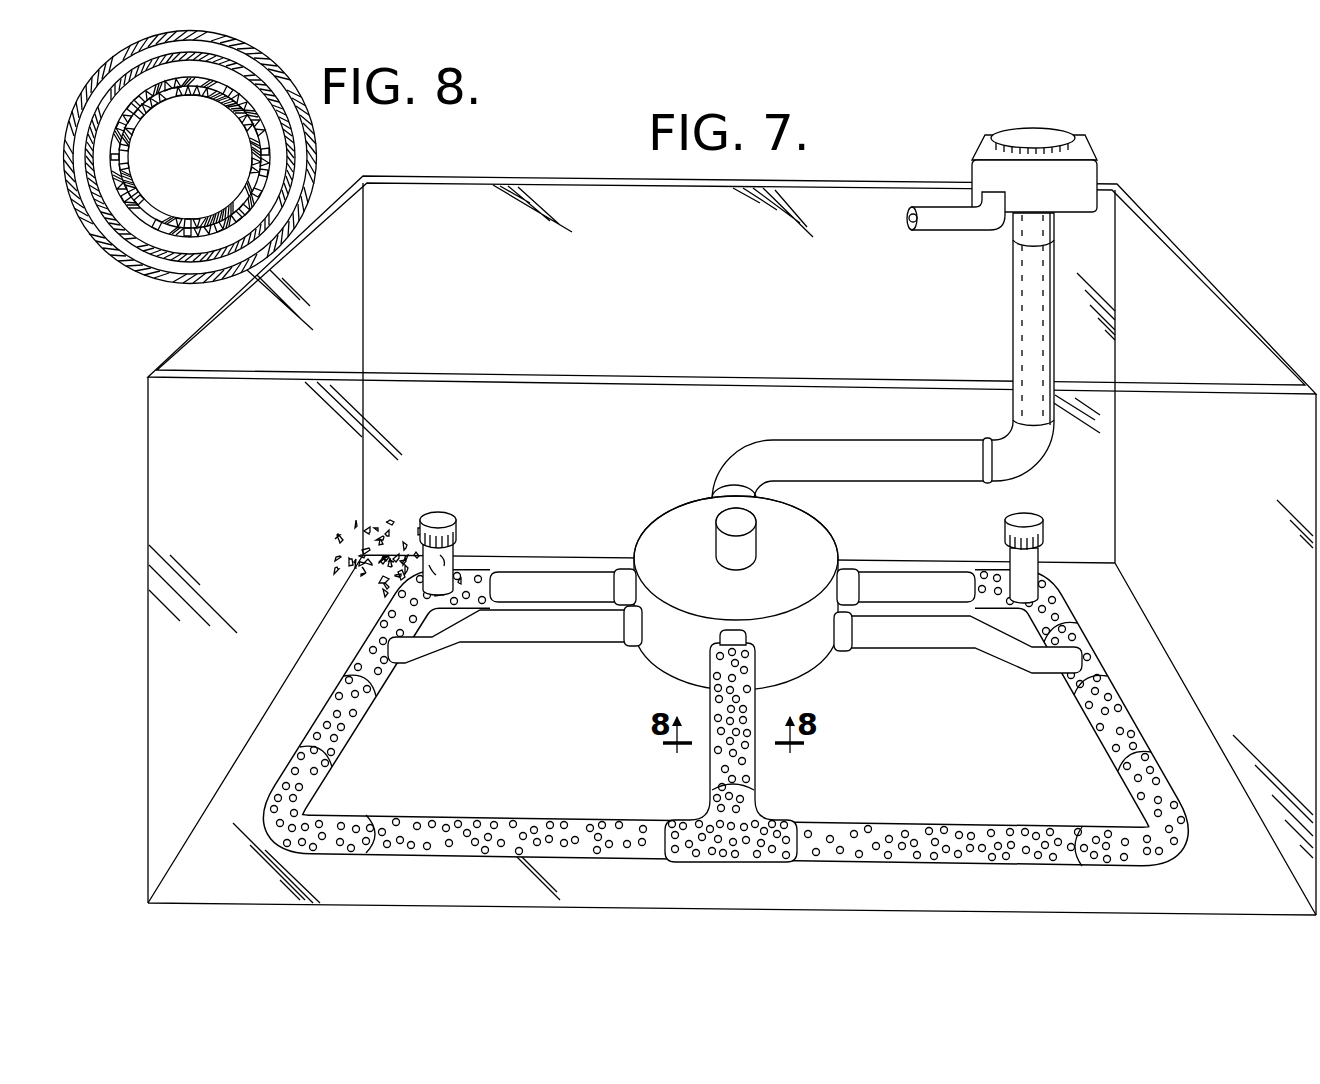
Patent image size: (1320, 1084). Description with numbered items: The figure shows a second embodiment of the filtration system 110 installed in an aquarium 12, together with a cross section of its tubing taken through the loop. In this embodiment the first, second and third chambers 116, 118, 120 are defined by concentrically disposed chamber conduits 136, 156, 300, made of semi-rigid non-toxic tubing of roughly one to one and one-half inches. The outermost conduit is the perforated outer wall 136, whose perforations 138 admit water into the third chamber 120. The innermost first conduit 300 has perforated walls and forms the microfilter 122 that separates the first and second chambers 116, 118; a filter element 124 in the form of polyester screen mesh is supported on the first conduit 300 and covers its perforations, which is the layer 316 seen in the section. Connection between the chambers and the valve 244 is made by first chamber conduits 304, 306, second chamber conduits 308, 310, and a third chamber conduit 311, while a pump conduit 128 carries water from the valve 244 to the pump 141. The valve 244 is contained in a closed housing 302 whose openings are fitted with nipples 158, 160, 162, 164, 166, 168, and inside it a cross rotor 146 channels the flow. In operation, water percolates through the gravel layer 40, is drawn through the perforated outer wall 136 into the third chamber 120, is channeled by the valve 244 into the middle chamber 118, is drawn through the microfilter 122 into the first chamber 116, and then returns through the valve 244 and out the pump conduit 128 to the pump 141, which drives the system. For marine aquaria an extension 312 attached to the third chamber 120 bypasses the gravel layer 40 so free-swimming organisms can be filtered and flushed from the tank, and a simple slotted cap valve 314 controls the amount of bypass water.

In FIG. 7, the aquarium tank 12 is at (1208, 270).
In FIG. 7, the gravel layer 40 is at (356, 540).
In FIG. 7, the system 110 is at (1100, 615).
In FIG. 8, the first chamber 116 is at (207, 176).
In FIG. 8, the second chamber 118 is at (140, 86).
In FIG. 8, the third chamber 120 is at (146, 58).
In FIG. 8, the microfilter 122 is at (276, 148).
In FIG. 8, the filter element 124 is at (278, 170).
In FIG. 7, the pump conduit 128 is at (828, 450).
In FIG. 8, the outer wall 136 is at (178, 284).
In FIG. 8, the perforations 138 is at (94, 244).
In FIG. 7, the pump 141 is at (1082, 176).
In FIG. 7, the cross rotor 146 is at (763, 524).
In FIG. 8, the chamber conduit 156 is at (303, 126).
In FIG. 7, the nipple 158 is at (733, 634).
In FIG. 7, the nipple 160 is at (734, 490).
In FIG. 7, the nipple 162 is at (848, 575).
In FIG. 7, the nipple 164 is at (626, 578).
In FIG. 7, the nipple 166 is at (838, 632).
In FIG. 7, the nipple 168 is at (633, 634).
In FIG. 7, the valve 244 is at (841, 539).
In FIG. 8, the first conduit 300 is at (240, 103).
In FIG. 7, the housing 302 is at (818, 534).
In FIG. 7, the first chamber conduit 304 is at (962, 644).
In FIG. 7, the first chamber conduit 306 is at (509, 636).
In FIG. 7, the second chamber conduit 308 is at (907, 588).
In FIG. 7, the second chamber conduit 310 is at (561, 588).
In FIG. 7, the third chamber conduit 311 is at (714, 708).
In FIG. 7, the extension 312 is at (470, 490).
In FIG. 7, the slotted cap valve 314 is at (1005, 543).
In FIG. 8, the inner perforated layer 316 is at (182, 97).